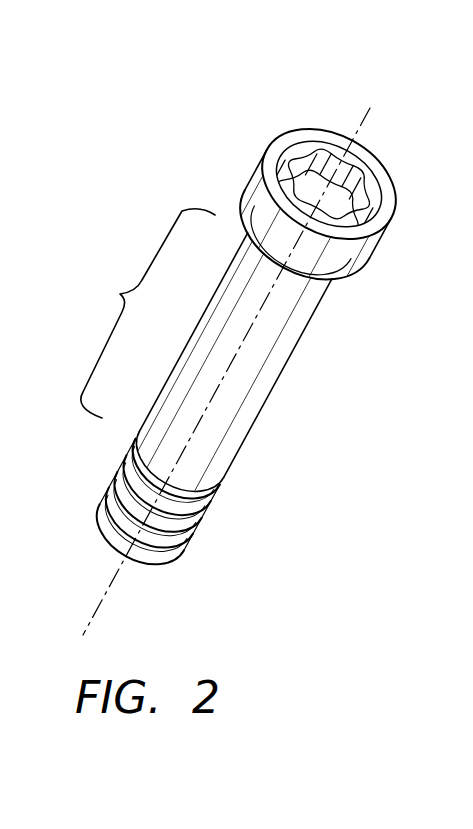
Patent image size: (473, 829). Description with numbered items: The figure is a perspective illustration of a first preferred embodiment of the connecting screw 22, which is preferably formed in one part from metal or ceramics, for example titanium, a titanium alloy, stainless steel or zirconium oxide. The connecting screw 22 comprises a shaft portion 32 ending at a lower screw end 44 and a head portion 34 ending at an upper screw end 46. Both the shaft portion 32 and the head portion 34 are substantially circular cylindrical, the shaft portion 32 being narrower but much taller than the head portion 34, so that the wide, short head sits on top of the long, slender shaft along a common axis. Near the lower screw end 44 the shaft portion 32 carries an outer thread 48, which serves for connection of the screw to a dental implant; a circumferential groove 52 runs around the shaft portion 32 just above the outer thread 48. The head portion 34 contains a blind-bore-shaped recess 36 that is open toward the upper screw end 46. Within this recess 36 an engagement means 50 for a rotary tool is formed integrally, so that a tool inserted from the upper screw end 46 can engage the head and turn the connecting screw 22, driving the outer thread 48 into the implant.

The connecting screw 22 is at (158, 169).
The upper screw end 46 is at (262, 162).
The blind-bore-shaped recess 36 is at (372, 185).
The engagement means 50 is at (368, 168).
The head portion 34 is at (364, 269).
The shaft portion 32 is at (119, 293).
The circumferential groove 52 is at (190, 494).
The outer thread 48 is at (200, 528).
The lower screw end 44 is at (178, 566).